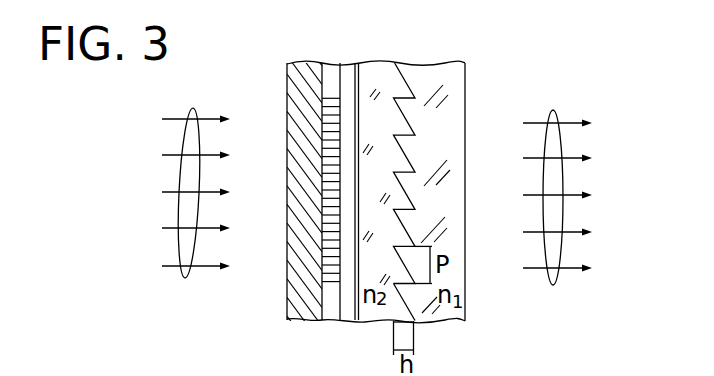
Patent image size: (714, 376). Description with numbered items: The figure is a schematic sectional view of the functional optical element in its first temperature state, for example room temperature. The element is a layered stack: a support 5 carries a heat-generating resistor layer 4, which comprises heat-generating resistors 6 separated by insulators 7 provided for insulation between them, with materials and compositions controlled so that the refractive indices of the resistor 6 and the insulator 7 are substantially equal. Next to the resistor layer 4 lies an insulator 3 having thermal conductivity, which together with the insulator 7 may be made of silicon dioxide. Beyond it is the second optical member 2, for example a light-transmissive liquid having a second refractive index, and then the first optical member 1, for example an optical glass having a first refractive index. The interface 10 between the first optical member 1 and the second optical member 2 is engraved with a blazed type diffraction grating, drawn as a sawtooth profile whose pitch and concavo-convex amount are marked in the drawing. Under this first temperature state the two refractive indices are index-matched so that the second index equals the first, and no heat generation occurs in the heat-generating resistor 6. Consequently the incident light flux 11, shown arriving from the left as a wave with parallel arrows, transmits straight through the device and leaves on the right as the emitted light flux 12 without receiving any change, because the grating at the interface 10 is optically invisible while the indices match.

The first optical member 1 is at (428, 72).
The second optical member 2 is at (385, 72).
The insulator having thermal conductivity 3 is at (352, 70).
The heat-generating resistor layer 4 is at (337, 70).
The support 5 is at (300, 72).
The heat-generating resistor 6 is at (324, 253).
The insulator 7 is at (328, 74).
The interface 10 is at (399, 293).
The incident light flux 11 is at (185, 278).
The emitted light flux 12 is at (556, 285).